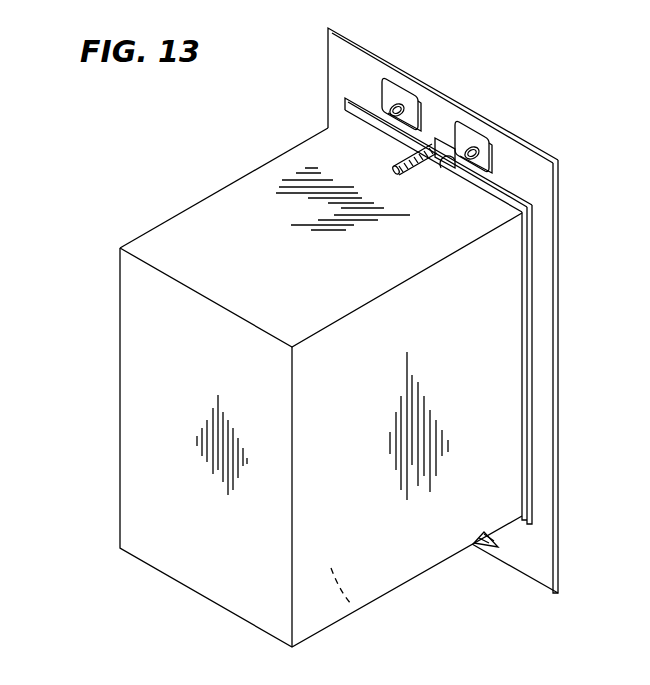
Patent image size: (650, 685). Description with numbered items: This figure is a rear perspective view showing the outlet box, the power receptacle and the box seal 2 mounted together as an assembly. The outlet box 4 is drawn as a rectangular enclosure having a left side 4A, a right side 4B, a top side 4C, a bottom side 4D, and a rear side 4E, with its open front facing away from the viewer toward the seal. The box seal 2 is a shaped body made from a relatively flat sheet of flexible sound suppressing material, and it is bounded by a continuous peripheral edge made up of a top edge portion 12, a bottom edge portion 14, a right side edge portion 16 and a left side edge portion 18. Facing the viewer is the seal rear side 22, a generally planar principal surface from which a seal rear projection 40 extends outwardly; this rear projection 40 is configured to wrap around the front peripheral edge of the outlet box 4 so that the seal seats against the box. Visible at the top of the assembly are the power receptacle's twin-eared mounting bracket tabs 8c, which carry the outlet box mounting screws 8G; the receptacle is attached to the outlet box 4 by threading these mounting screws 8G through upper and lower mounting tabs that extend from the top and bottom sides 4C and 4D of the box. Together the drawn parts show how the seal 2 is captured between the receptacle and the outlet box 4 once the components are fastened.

The box seal 2 is at (565, 133).
The outlet box 4 is at (108, 305).
The left side 4A is at (390, 551).
The right side 4B is at (240, 233).
The top side 4C is at (186, 232).
The bottom side 4D is at (350, 605).
The rear side 4E is at (152, 413).
The twin-eared mounting bracket tabs 8c is at (447, 141).
The outlet box mounting screws 8G is at (421, 168).
The top edge portion 12 is at (414, 77).
The bottom edge portion 14 is at (522, 573).
The right side edge portion 16 is at (327, 91).
The left side edge portion 18 is at (555, 368).
The seal rear side 22 is at (542, 231).
The seal rear projection 40 is at (530, 307).